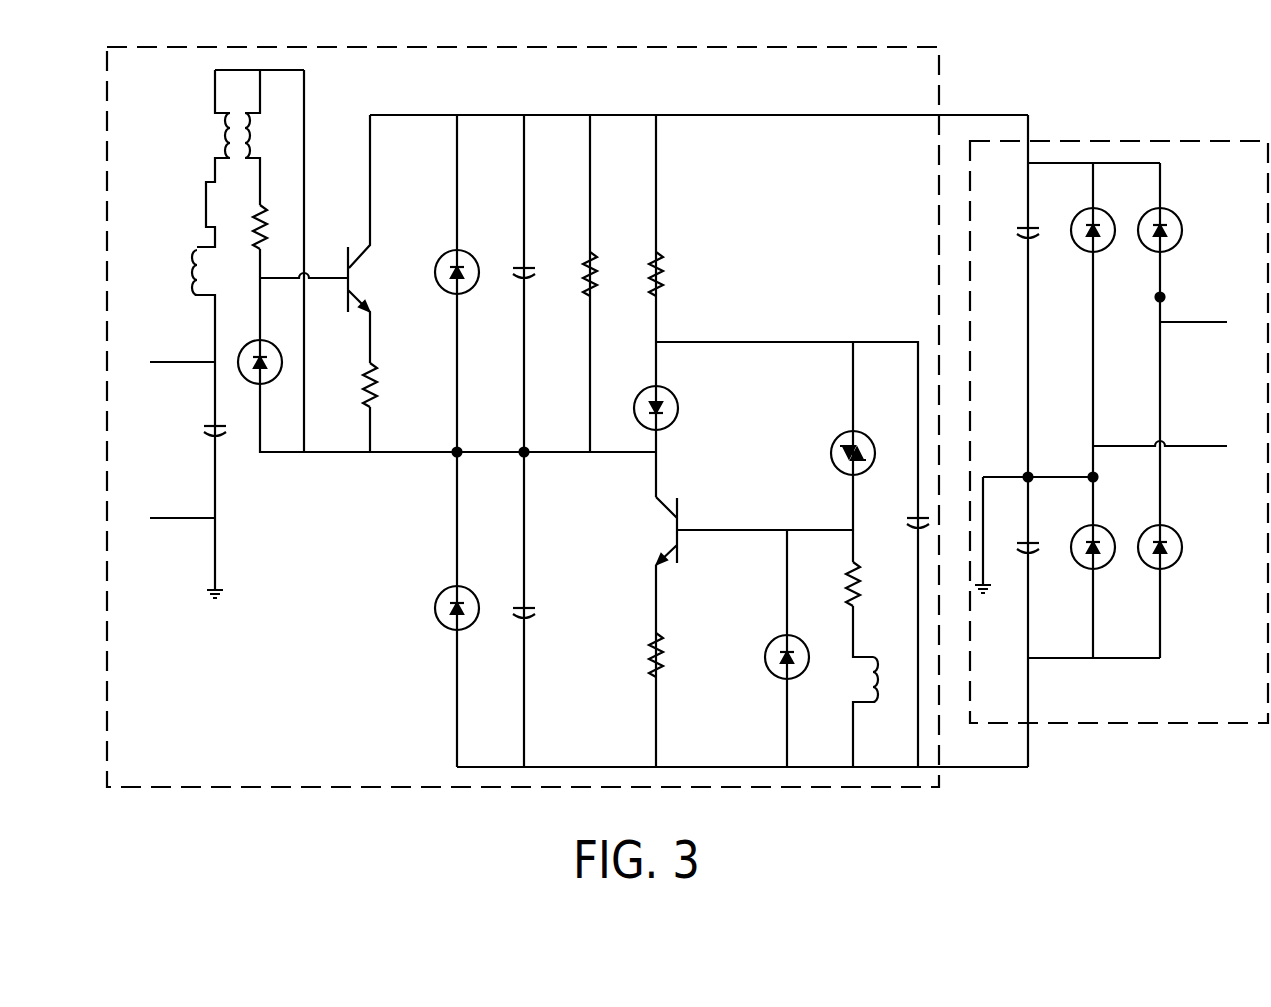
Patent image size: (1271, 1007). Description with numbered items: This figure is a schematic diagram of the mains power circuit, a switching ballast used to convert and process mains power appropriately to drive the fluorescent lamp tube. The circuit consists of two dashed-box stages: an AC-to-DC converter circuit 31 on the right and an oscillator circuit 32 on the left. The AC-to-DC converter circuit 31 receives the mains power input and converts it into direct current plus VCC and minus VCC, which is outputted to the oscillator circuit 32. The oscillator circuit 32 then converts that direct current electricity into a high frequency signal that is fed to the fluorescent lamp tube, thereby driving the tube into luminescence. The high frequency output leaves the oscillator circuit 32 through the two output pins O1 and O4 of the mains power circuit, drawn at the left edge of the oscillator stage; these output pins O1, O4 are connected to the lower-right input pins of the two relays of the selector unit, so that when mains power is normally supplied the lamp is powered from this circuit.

The AC-to-DC converter circuit 31 is at (1099, 127).
The oscillator circuit 32 is at (558, 44).
The output pin O1 is at (166, 356).
The output pin O4 is at (174, 539).